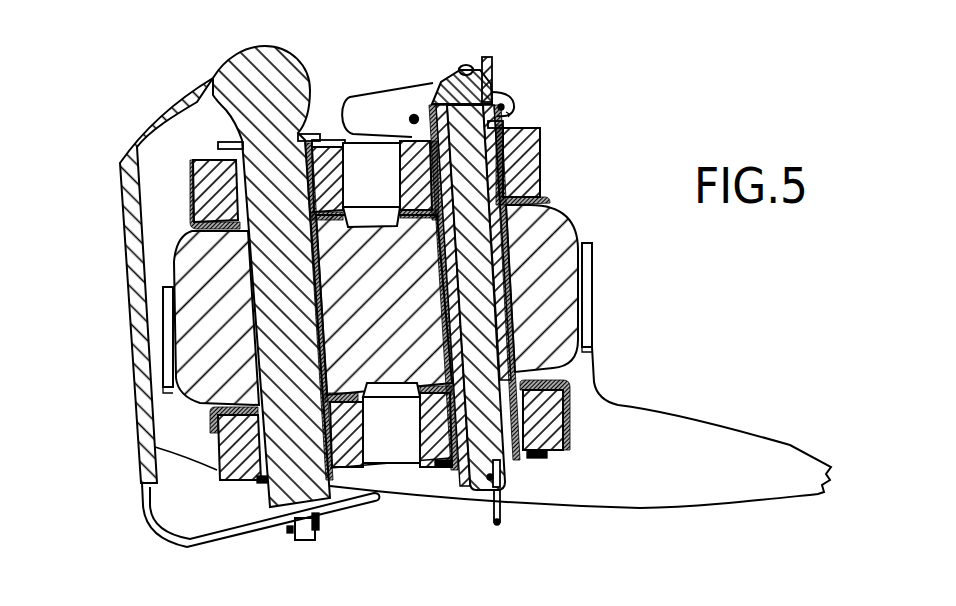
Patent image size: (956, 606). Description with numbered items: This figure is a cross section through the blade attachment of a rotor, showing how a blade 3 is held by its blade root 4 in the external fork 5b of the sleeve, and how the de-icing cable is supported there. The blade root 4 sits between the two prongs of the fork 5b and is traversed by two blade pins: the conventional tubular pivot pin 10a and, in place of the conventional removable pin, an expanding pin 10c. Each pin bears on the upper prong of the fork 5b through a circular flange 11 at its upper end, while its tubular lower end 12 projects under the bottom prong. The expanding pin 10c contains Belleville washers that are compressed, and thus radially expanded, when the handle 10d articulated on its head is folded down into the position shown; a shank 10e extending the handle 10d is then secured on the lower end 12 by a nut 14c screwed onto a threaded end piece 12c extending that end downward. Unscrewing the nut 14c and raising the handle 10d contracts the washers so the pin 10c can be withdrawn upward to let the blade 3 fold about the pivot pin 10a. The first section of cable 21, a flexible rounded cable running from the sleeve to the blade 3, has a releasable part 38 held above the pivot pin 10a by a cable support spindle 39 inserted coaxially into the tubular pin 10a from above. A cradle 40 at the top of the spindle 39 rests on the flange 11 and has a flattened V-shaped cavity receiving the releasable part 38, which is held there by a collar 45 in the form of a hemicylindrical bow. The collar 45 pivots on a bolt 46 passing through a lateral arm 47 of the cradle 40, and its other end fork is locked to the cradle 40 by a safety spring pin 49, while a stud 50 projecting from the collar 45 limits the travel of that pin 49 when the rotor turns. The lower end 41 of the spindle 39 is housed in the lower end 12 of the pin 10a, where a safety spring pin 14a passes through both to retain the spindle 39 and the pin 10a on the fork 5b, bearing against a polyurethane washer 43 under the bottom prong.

The blade 3 is at (745, 427).
The blade root 4 is at (540, 270).
The external fork 5b is at (530, 148).
The blade pin 10a is at (507, 337).
The expanding pin 10c is at (285, 322).
The handle 10d is at (140, 131).
The shank 10e is at (183, 545).
The circular flange 11 is at (222, 142).
The tubular lower end 12 is at (287, 482).
The threaded end piece 12c is at (305, 536).
The safety spring pin 14a is at (507, 487).
The nut 14c is at (317, 522).
The first section of cable 21 is at (373, 88).
The releasable part 38 is at (493, 95).
The cable support spindle 39 is at (467, 170).
The cradle 40 is at (512, 100).
The lower end 41 is at (490, 477).
The polyurethane washer 43 is at (540, 457).
The collar 45 is at (463, 66).
The bolt 46 is at (415, 115).
The lateral arm 47 is at (442, 90).
The safety spring pin 49 is at (515, 108).
The stud 50 is at (487, 60).